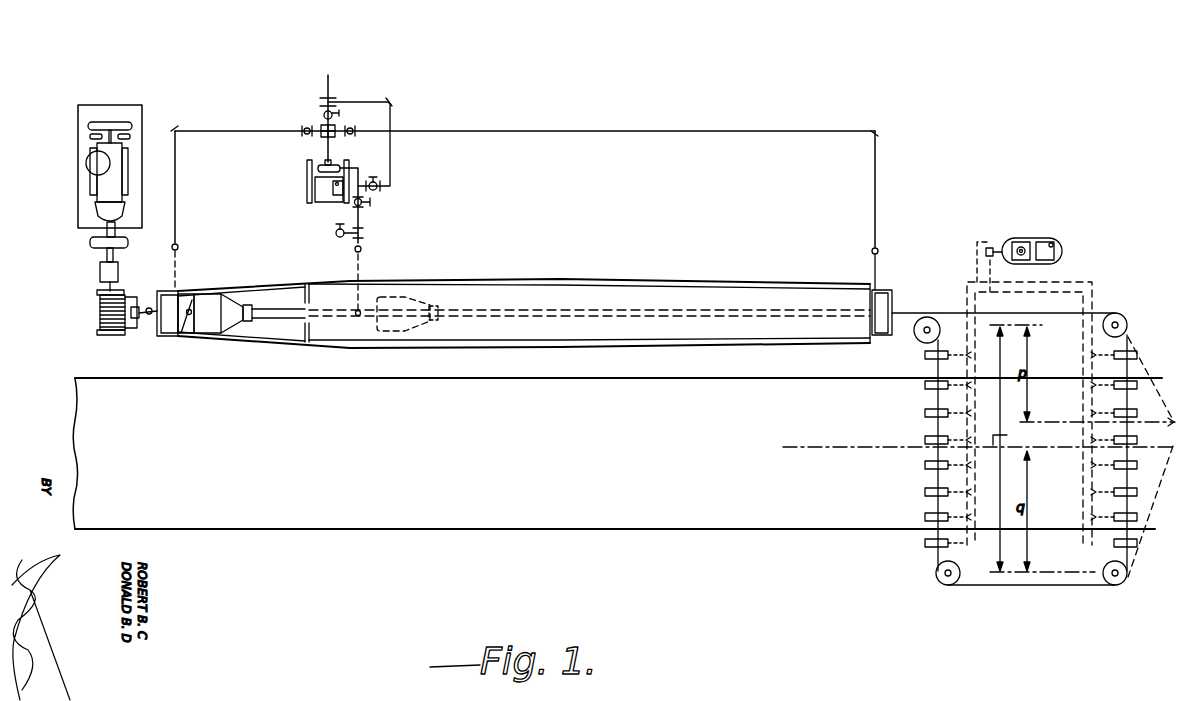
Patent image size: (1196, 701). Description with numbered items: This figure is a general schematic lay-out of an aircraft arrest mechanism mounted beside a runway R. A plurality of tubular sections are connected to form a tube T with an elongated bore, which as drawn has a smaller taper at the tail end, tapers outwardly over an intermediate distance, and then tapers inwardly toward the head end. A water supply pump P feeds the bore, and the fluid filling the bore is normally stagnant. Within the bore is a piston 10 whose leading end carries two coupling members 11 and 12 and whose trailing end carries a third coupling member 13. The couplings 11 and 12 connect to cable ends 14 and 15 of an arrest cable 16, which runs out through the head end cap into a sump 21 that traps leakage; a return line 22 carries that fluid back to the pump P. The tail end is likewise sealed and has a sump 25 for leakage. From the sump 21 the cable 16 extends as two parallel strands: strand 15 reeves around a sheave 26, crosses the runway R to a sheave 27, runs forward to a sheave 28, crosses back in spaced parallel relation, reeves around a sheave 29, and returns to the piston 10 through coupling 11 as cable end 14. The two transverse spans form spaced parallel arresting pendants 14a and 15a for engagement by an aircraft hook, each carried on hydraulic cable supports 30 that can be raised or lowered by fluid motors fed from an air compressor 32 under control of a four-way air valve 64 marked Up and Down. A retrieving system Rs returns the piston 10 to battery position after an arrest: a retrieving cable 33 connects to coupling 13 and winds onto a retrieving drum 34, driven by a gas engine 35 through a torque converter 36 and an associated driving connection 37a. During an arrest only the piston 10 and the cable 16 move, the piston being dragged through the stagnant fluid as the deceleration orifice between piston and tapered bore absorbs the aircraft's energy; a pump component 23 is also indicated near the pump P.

The piston 10 is at (209, 326).
The coupling member 11 is at (243, 309).
The coupling member 12 is at (249, 323).
The coupling member 13 is at (186, 330).
The cable end 14 is at (264, 312).
The arresting pendant 14a is at (1128, 453).
The cable end 15 is at (292, 324).
The arresting pendant 15a is at (925, 414).
The arrest cable 16 is at (918, 303).
The sump 21 is at (884, 329).
The return line 22 is at (877, 192).
The pump 23 is at (322, 186).
The sump 25 is at (167, 323).
The sheave 26 is at (922, 338).
The sheave 27 is at (943, 582).
The sheave 28 is at (1108, 584).
The sheave 29 is at (1127, 326).
The hydraulic cable support 30 is at (923, 492).
The air compressor 32 is at (1037, 241).
The retrieving cable 33 is at (143, 310).
The retrieving drum 34 is at (108, 317).
The gas engine 35 is at (100, 197).
The torque converter 36 is at (90, 243).
The plunger block 37a is at (114, 270).
The four-way air valve 64 is at (994, 248).
The runway R is at (702, 517).
The tube T is at (642, 281).
The water supply pump P is at (326, 196).
The retrieving system Rs is at (96, 254).